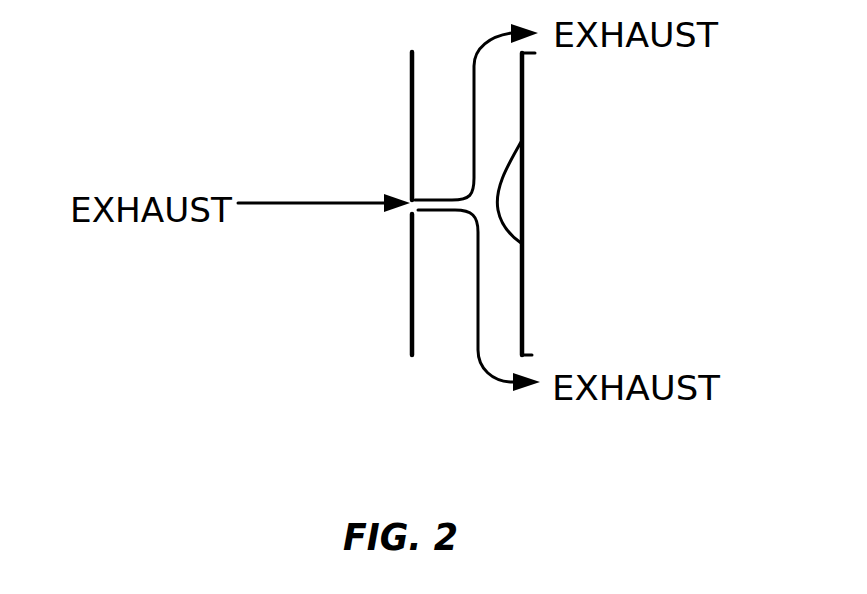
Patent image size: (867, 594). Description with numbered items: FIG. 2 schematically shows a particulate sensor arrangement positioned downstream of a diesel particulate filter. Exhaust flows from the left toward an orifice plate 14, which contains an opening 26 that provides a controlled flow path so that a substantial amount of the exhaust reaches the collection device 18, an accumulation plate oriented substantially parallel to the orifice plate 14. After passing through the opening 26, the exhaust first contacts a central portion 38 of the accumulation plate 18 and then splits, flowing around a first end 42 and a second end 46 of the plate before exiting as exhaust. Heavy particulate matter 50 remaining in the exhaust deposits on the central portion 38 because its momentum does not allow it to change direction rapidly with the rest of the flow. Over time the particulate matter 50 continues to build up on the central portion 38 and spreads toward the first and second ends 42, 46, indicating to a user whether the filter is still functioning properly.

The orifice plate 14 is at (412, 148).
The opening 26 is at (410, 214).
The collection device 18 is at (523, 114).
The first end 42 is at (535, 53).
The second end 46 is at (532, 355).
The particulate matter 50 is at (513, 222).
The central portion 38 is at (527, 205).